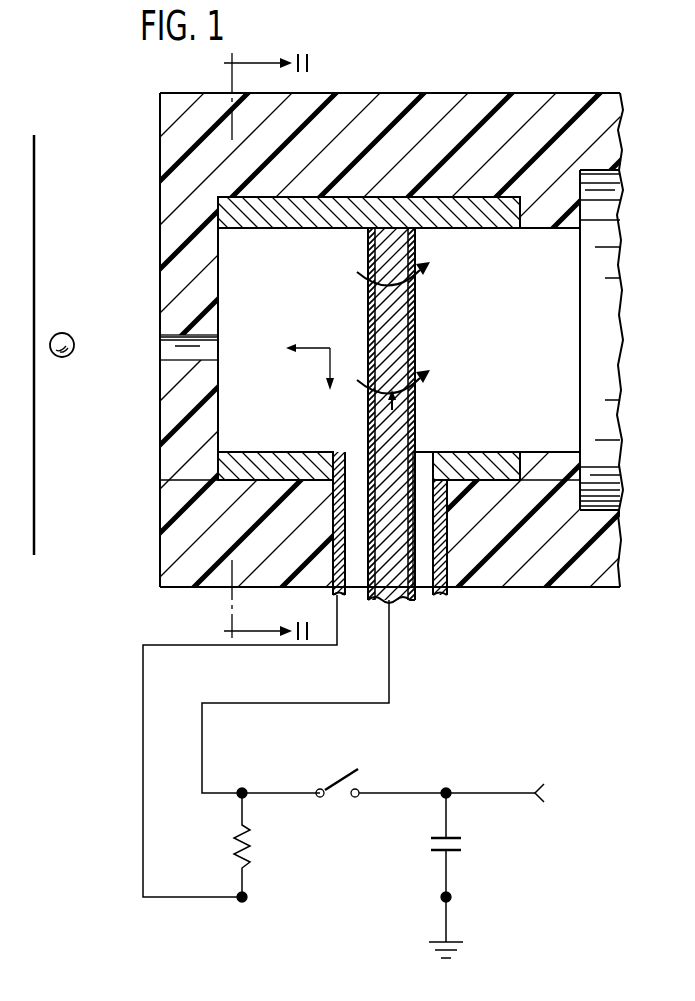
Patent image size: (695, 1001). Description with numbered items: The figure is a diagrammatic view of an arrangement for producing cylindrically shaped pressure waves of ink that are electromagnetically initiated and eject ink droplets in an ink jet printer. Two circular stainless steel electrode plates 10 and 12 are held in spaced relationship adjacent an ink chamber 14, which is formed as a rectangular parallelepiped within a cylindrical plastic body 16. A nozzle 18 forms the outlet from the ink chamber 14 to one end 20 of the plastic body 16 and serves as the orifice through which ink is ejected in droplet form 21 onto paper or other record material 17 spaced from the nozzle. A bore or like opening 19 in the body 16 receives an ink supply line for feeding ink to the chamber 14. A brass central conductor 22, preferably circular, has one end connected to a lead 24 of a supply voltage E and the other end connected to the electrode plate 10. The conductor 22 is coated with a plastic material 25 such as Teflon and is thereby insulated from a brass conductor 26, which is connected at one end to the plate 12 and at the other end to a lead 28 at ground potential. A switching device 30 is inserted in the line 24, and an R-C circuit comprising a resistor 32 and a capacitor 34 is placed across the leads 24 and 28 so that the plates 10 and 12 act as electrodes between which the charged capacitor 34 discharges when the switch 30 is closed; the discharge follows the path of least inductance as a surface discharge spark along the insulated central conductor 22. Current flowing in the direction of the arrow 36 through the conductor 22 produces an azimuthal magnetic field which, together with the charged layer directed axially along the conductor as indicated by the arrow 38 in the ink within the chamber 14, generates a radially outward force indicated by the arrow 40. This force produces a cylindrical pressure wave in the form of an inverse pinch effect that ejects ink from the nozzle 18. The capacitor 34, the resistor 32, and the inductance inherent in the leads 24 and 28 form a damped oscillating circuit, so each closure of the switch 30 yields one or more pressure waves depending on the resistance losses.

The electrode plate 10 is at (218, 211).
The electrode plate 12 is at (218, 467).
The ink chamber 14 is at (264, 410).
The plastic body 16 is at (600, 551).
The record material 17 is at (34, 412).
The nozzle 18 is at (180, 360).
The bore 19 is at (603, 211).
The end of the plastic body 20 is at (158, 284).
The ink droplet 21 is at (68, 333).
The central conductor 22 is at (400, 354).
The lead 24 is at (390, 656).
The plastic coating 25 is at (410, 319).
The conductor 26 is at (330, 598).
The lead 28 is at (205, 648).
The switching device 30 is at (343, 772).
The resistor 32 is at (252, 841).
The capacitor 34 is at (460, 839).
The arrow 36 is at (410, 404).
The arrow 38 is at (330, 370).
The arrow 40 is at (330, 348).
The supply voltage E is at (550, 794).